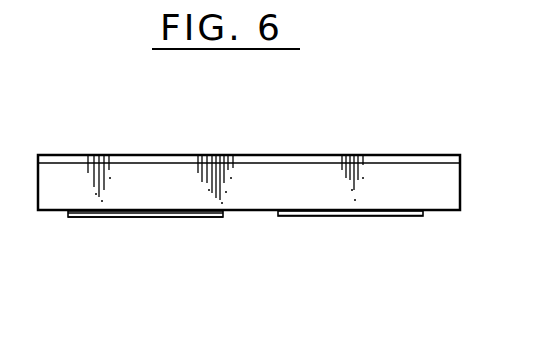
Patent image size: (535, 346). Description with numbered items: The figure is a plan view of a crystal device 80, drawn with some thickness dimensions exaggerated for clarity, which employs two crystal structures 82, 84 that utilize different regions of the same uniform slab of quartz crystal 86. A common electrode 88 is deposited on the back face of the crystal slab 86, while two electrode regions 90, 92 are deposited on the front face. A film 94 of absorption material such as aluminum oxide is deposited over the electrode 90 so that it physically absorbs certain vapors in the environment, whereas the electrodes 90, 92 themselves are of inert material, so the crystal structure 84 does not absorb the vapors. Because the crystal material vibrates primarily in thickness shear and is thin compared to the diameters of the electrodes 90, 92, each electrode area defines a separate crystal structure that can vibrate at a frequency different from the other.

The crystal device 80 is at (155, 151).
The crystal structure 82 is at (84, 226).
The crystal structure 84 is at (318, 226).
The slab of quartz crystal 86 is at (267, 172).
The common electrode 88 is at (190, 157).
The electrode region 90 is at (128, 216).
The electrode region 92 is at (393, 217).
The film of absorption material 94 is at (177, 216).